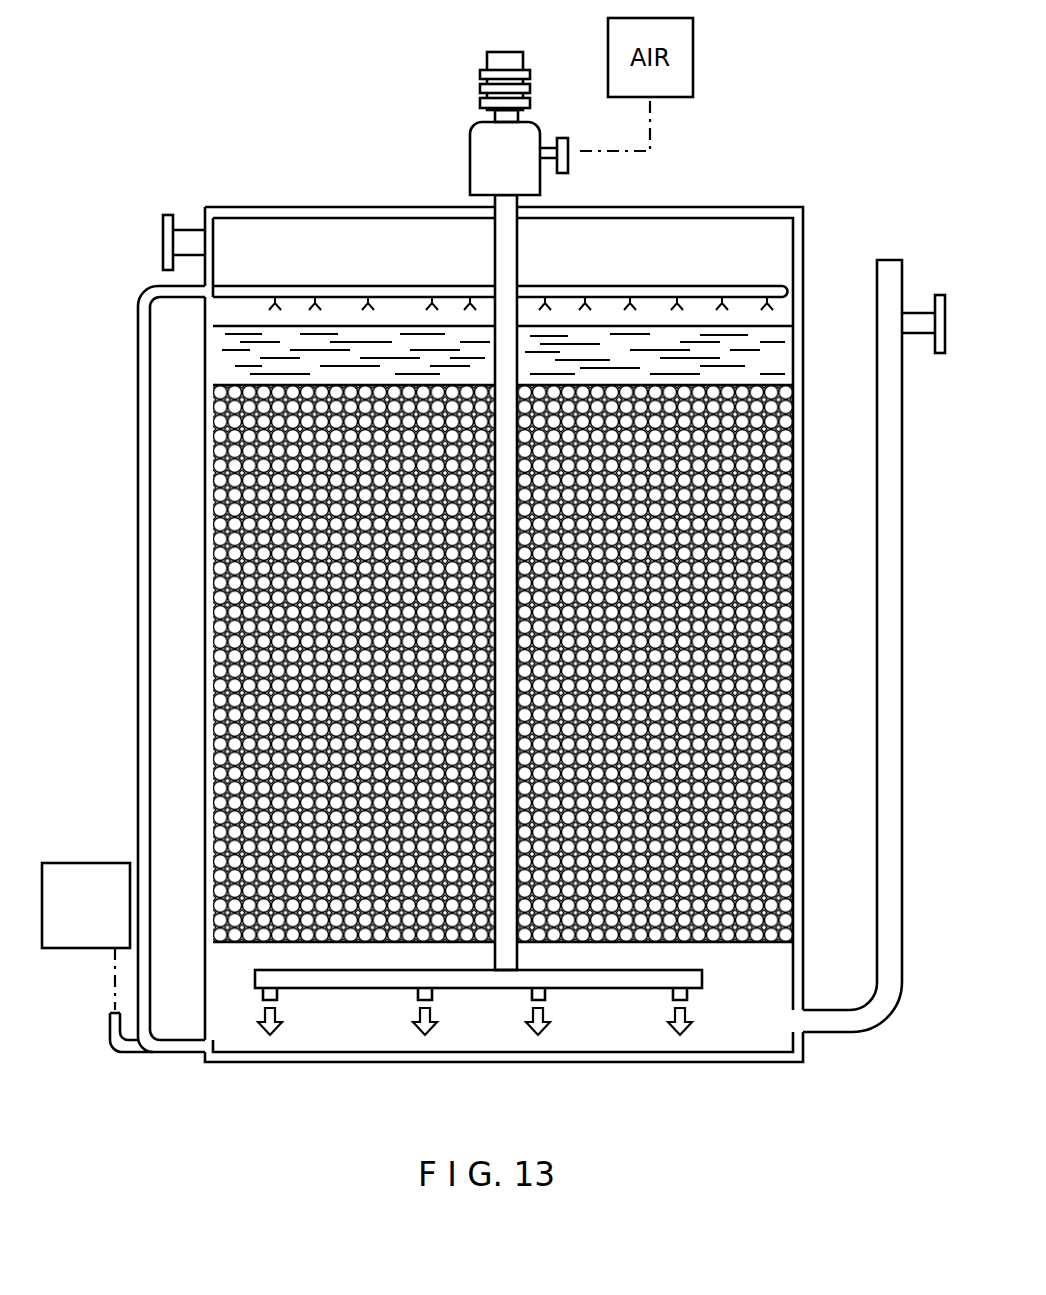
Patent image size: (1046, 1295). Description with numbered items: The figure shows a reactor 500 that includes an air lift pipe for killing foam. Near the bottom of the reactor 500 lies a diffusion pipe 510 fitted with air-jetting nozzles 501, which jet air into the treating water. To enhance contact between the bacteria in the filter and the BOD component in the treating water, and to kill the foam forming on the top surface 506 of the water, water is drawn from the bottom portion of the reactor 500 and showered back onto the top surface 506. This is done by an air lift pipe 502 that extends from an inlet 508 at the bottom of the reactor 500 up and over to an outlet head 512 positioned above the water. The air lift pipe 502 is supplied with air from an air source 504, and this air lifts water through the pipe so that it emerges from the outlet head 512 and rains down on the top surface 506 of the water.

The reactor 500 is at (698, 168).
The air-jetting nozzles 501 is at (507, 1008).
The air lift pipe 502 is at (137, 737).
The air source 504 is at (75, 862).
The top surface of the water 506 is at (770, 324).
The inlet 508 is at (196, 1053).
The diffusion pipe 510 is at (667, 963).
The outlet head 512 is at (335, 286).